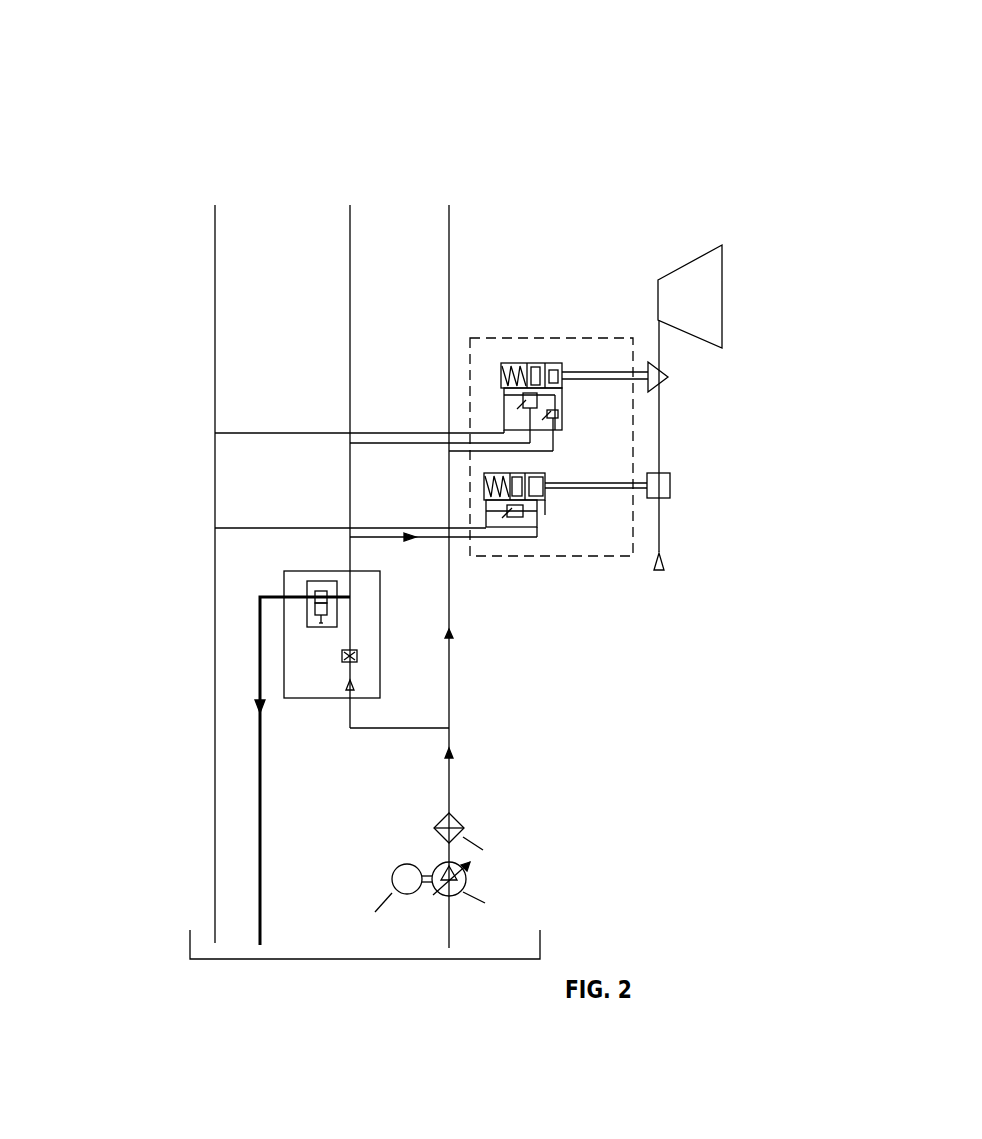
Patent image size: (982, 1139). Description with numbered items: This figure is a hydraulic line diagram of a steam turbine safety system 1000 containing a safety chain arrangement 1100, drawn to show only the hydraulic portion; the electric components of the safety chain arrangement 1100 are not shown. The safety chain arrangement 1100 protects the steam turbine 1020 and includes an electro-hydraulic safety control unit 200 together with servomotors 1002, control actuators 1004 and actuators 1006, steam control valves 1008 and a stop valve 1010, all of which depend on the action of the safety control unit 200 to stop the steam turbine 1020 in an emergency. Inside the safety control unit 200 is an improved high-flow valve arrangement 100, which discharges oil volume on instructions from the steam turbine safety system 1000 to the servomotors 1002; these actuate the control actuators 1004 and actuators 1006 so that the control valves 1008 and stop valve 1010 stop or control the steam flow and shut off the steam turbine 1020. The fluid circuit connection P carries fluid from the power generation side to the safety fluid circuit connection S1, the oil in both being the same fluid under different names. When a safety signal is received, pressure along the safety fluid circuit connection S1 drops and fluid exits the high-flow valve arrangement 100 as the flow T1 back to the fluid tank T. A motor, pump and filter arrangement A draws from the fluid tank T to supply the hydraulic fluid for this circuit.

The steam turbine safety system 1000 is at (413, 98).
The safety chain arrangement 1100 is at (190, 235).
The servomotors 1002 is at (513, 557).
The control actuators 1004 is at (545, 368).
The actuators 1006 is at (540, 505).
The steam control valves 1008 is at (660, 377).
The stop valve 1010 is at (670, 483).
The steam turbine 1020 is at (722, 306).
The electro-hydraulic safety control unit 200 is at (283, 575).
The high-flow valve arrangement 100 is at (315, 615).
The safety fluid circuit connection S1 is at (408, 552).
The fluid exit flow T1 is at (260, 793).
The fluid circuit connection P is at (449, 782).
The motor, pump and filter arrangement A is at (495, 882).
The fluid tank T is at (397, 959).